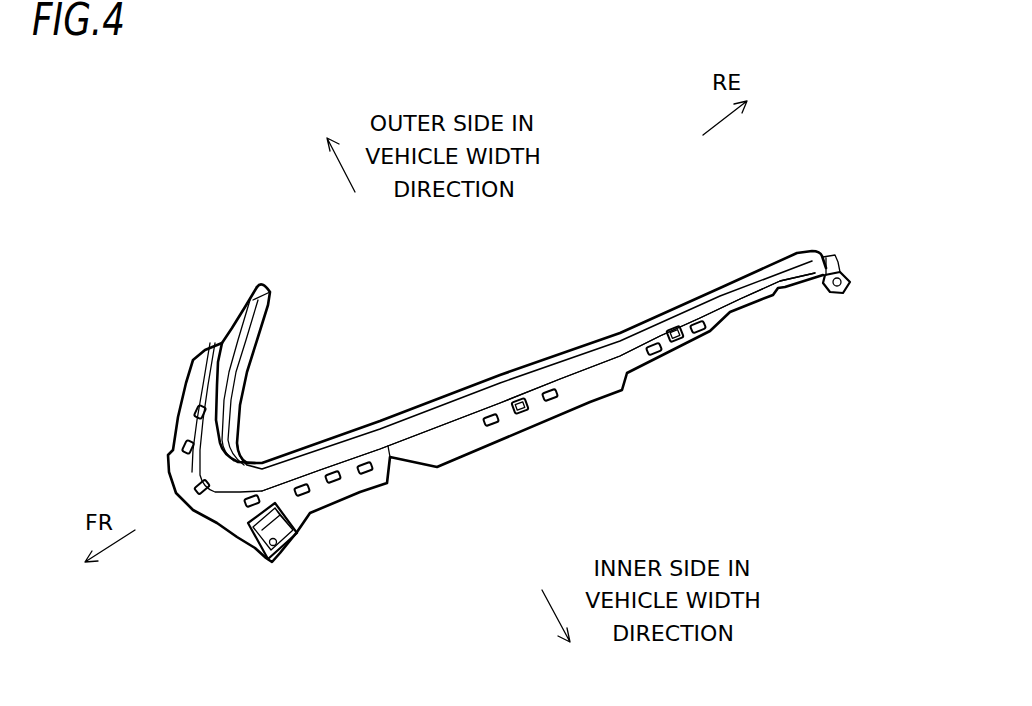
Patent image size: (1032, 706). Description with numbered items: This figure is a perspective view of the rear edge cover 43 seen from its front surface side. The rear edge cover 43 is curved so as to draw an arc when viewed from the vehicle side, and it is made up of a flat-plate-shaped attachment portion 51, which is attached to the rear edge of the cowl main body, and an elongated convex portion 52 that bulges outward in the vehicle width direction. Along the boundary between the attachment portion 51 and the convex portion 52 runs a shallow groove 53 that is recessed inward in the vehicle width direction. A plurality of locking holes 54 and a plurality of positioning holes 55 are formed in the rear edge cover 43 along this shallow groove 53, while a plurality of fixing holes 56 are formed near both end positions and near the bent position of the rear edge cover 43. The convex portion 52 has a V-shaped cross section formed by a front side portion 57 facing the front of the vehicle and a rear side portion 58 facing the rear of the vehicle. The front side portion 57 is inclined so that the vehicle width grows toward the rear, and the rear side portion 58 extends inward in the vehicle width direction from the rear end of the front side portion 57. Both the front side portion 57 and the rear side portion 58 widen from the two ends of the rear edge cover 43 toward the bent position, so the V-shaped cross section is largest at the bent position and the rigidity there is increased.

The rear edge cover 43 is at (531, 241).
The attachment portion 51 is at (235, 520).
The convex portion 52 is at (298, 347).
The shallow groove 53 is at (422, 443).
The locking hole 54 is at (519, 399).
The positioning hole 55 is at (486, 416).
The fixing hole 56 is at (296, 528).
The front side portion 57 is at (244, 468).
The rear side portion 58 is at (240, 388).